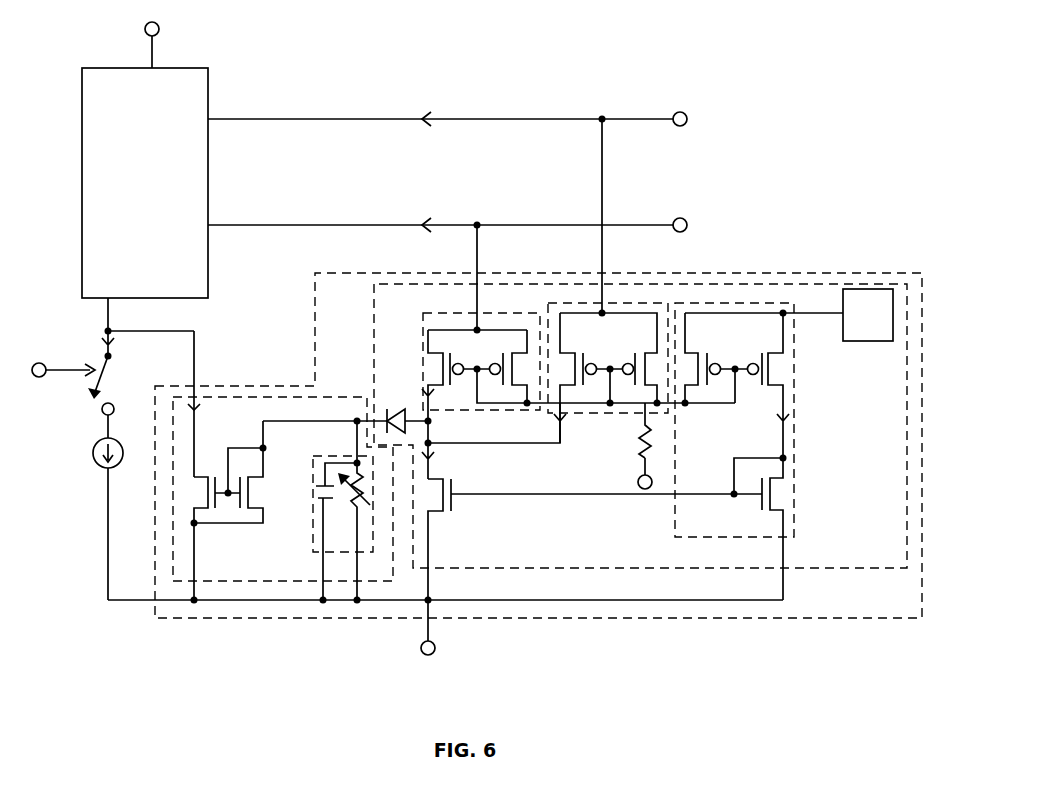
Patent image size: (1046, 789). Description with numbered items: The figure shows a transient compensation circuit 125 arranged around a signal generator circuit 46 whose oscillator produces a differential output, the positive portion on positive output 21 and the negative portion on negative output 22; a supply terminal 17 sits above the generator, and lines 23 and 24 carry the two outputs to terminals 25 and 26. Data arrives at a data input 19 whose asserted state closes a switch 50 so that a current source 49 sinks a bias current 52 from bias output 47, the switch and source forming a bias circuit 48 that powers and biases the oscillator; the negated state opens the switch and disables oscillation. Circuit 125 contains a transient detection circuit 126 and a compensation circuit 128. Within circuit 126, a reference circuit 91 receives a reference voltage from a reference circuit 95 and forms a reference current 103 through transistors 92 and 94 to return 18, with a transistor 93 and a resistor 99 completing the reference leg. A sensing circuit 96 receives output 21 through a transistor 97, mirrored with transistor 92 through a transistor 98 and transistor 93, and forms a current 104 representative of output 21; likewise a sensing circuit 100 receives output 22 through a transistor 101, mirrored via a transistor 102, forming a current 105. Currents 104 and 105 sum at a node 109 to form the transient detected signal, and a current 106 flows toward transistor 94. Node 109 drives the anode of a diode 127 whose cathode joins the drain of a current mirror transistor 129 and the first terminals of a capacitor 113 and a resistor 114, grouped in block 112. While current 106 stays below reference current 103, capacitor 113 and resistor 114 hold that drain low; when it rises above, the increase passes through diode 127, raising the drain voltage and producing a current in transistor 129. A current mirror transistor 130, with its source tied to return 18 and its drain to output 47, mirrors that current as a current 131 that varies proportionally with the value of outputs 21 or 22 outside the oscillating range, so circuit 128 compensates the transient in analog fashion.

The power supply terminal 17 is at (158, 26).
The positive output 21 is at (213, 118).
The negative output 22 is at (213, 224).
The first signal line 23 is at (420, 114).
The second signal line 24 is at (420, 220).
The first terminal 25 is at (687, 118).
The second terminal 26 is at (687, 224).
The signal generator circuit 46 is at (208, 162).
The bias output 47 is at (110, 305).
The bias current 52 is at (112, 340).
The data input 19 is at (51, 371).
The switch 50 is at (102, 378).
The bias circuit 48 is at (66, 412).
The current source 49 is at (100, 468).
The transient compensation circuit 125 is at (252, 386).
The transient detection circuit 126 is at (540, 568).
The current mirror transistor 130 is at (192, 495).
The current 131 is at (198, 410).
The current mirror transistor 129 is at (256, 520).
The variable element block 112 is at (312, 544).
The capacitor 113 is at (316, 488).
The resistor 114 is at (347, 500).
The compensation circuit 128 is at (233, 584).
The diode 127 is at (380, 408).
The sensing circuit 100 is at (423, 318).
The transistor 101 is at (450, 349).
The transistor 102 is at (506, 384).
The current 105 is at (421, 394).
The node 109 is at (435, 422).
The current 106 is at (435, 458).
The current 104 is at (446, 514).
The sensing circuit 96 is at (578, 412).
The transistor 97 is at (590, 355).
The transistor 98 is at (636, 355).
The resistor 99 is at (638, 440).
The return 18 is at (422, 652).
The transistor 93 is at (712, 356).
The transistor 92 is at (758, 356).
The reference circuit 95 is at (858, 341).
The reference current 103 is at (778, 421).
The transistor 94 is at (788, 495).
The reference circuit 91 is at (674, 516).